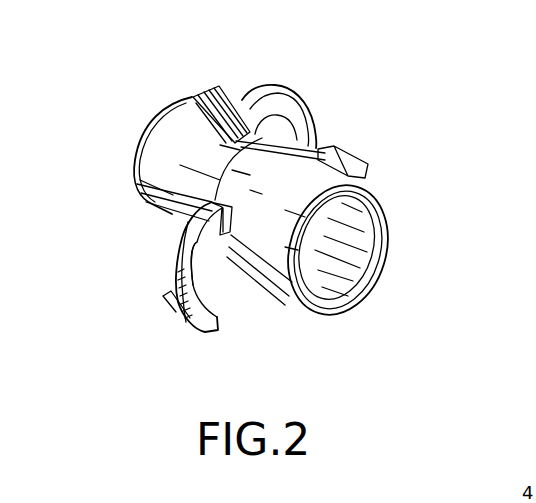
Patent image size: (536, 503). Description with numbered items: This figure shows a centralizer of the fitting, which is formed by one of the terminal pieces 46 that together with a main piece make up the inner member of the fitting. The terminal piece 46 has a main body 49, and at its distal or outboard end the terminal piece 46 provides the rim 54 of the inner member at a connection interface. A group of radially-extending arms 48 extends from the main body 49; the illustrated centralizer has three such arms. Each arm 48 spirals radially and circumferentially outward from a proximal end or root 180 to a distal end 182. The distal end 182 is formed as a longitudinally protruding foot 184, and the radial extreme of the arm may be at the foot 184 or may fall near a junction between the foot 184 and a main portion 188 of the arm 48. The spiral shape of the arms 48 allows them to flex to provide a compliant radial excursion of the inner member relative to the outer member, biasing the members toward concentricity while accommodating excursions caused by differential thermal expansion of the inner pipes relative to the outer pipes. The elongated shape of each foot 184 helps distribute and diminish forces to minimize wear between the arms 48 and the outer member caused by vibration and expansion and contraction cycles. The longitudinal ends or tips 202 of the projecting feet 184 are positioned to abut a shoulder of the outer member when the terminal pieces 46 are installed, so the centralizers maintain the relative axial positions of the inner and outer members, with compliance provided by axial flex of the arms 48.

The terminal piece 46 is at (335, 103).
The main body 49 is at (286, 188).
The rim 54 is at (348, 293).
The tip 202 is at (197, 101).
The root 180 is at (214, 203).
The distal end 182 is at (173, 322).
The arm 48 is at (205, 303).
The main portion 188 is at (160, 270).
The foot 184 is at (152, 313).